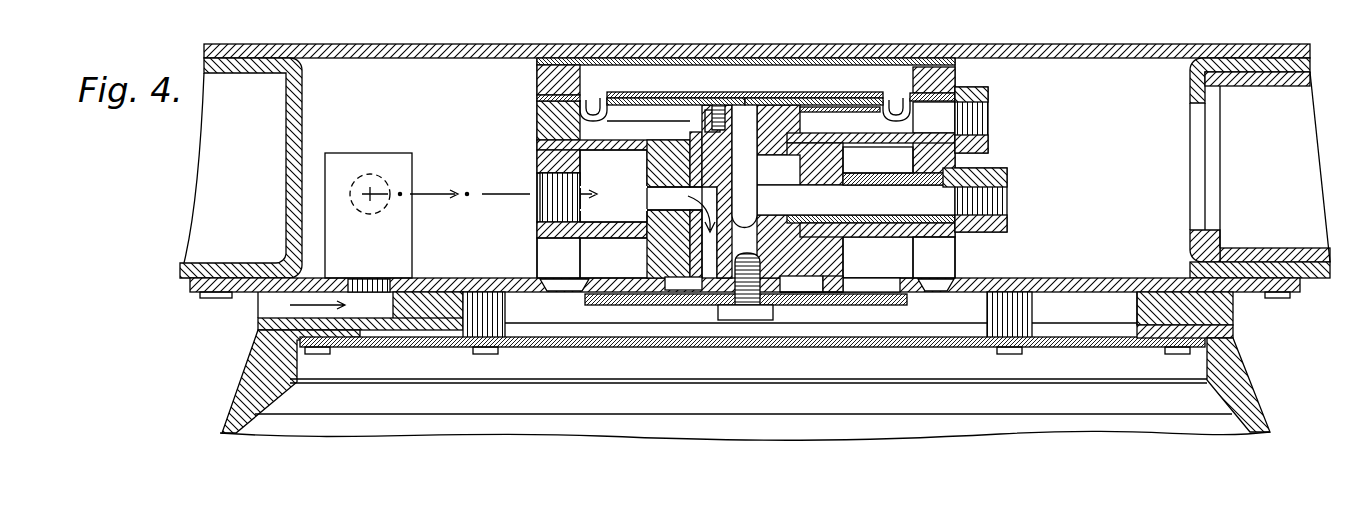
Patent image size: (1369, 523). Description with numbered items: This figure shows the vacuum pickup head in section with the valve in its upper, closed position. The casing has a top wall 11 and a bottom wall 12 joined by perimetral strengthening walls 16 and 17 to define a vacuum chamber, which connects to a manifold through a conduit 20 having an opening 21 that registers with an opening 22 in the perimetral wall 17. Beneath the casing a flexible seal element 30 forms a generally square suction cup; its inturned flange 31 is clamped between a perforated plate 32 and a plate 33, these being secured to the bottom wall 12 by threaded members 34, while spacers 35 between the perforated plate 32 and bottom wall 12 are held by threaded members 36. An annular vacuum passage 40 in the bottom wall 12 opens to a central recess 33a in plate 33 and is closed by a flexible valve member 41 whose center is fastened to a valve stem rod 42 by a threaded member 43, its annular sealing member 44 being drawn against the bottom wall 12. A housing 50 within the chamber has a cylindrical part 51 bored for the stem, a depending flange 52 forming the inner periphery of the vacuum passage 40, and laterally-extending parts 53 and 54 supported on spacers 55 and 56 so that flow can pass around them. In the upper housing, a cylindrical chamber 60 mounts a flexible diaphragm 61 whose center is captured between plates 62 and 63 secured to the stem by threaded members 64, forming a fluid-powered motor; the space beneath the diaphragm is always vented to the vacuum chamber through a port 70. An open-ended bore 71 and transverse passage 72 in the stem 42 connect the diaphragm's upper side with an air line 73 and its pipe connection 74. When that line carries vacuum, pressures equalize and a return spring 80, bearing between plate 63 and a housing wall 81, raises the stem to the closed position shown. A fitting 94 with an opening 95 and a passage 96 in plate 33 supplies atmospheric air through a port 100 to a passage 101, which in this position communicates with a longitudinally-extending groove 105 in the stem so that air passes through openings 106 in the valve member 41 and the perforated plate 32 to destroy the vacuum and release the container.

The top wall 11 is at (1078, 46).
The bottom wall 12 is at (1072, 280).
The perimetral strengthening wall 16 is at (301, 103).
The perimetral strengthening wall 17 is at (1198, 97).
The conduit 20 is at (1258, 88).
The opening 21 is at (1220, 222).
The opening 22 is at (1198, 232).
The seal element 30 is at (1240, 400).
The inturned flange 31 is at (1128, 348).
The perforated plate 32 is at (1076, 349).
The plate 33 is at (1222, 312).
The central recess 33a is at (1135, 305).
The threaded members 34 is at (1172, 356).
The spacers 35 is at (1012, 308).
The threaded members 36 is at (1013, 355).
The annular vacuum passage 40 is at (882, 290).
The valve member 41 is at (842, 302).
The valve stem rod 42 is at (752, 322).
The threaded member 43 is at (735, 320).
The annular sealing member 44 is at (878, 300).
The housing 50 is at (1017, 101).
The cylindrical part 51 is at (660, 248).
The depending flange 52 is at (650, 292).
The laterally-extending part 53 is at (613, 186).
The laterally-extending part 54 is at (905, 233).
The spacer 55 is at (548, 250).
The spacer 56 is at (943, 268).
The cylindrical chamber 60 is at (873, 78).
The flexible diaphragm 61 is at (598, 112).
The plate 62 is at (670, 100).
The plate 63 is at (636, 108).
The threaded members 64 is at (772, 98).
The port 70 is at (967, 138).
The open-ended bore 71 is at (752, 132).
The transverse passage 72 is at (770, 216).
The air line 73 is at (883, 183).
The pipe connection 74 is at (1006, 174).
The return spring 80 is at (795, 108).
The wall 81 is at (630, 146).
The fitting 94 is at (400, 153).
The opening 95 is at (380, 278).
The passage 96 is at (262, 319).
The port 100 is at (541, 184).
The passage 101 is at (662, 188).
The longitudinally-extending groove 105 is at (710, 302).
The openings 106 is at (690, 302).